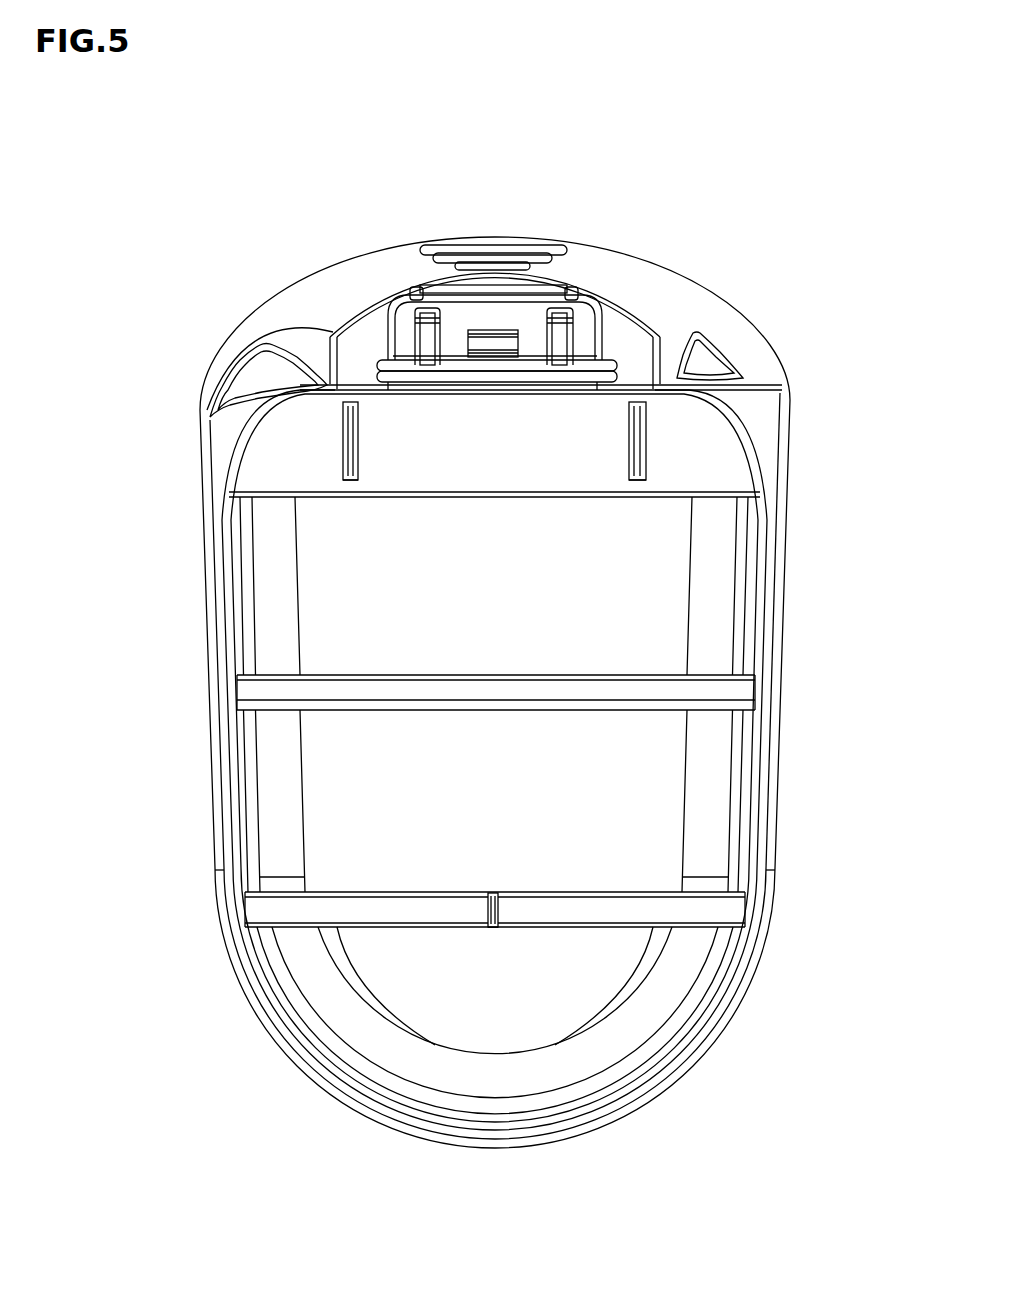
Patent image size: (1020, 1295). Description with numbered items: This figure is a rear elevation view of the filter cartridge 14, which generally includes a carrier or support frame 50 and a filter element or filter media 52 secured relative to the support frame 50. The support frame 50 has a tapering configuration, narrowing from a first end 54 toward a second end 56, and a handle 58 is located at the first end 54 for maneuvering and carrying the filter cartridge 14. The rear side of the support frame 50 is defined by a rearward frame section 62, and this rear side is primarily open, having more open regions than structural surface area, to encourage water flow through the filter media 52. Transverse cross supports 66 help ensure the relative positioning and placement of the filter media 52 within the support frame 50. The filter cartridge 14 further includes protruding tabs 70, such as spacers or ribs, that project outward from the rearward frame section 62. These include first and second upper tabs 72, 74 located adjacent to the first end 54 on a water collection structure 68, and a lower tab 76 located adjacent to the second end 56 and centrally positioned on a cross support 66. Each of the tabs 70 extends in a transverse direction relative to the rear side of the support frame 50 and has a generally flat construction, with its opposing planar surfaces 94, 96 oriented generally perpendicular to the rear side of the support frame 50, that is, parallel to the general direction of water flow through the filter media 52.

The filter cartridge 14 is at (268, 243).
The support frame 50 is at (190, 442).
The filter media 52 is at (316, 631).
The first end 54 is at (808, 384).
The second end 56 is at (790, 948).
The handle 58 is at (617, 272).
The rearward frame section 62 is at (268, 573).
The cross supports 66 is at (397, 697).
The water collection structure 68 is at (524, 449).
The protruding tab 70 is at (356, 498).
The first upper tab 72 is at (346, 455).
The second upper tab 74 is at (636, 429).
The lower tab 76 is at (501, 896).
The planar surface 94 is at (360, 414).
The planar surface 96 is at (341, 412).